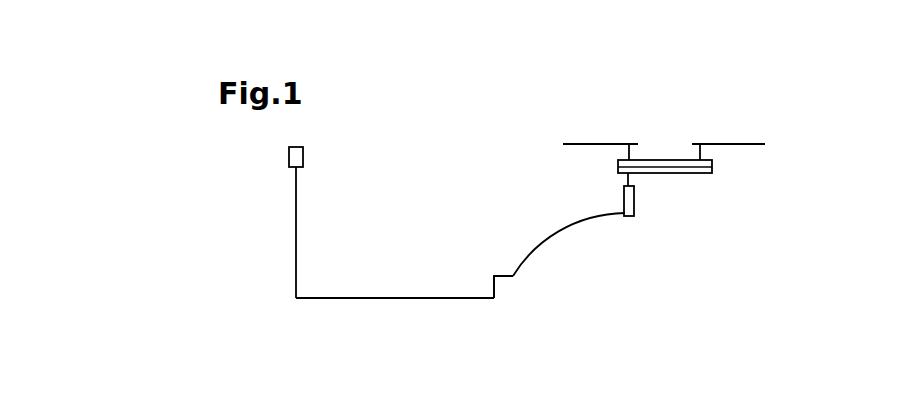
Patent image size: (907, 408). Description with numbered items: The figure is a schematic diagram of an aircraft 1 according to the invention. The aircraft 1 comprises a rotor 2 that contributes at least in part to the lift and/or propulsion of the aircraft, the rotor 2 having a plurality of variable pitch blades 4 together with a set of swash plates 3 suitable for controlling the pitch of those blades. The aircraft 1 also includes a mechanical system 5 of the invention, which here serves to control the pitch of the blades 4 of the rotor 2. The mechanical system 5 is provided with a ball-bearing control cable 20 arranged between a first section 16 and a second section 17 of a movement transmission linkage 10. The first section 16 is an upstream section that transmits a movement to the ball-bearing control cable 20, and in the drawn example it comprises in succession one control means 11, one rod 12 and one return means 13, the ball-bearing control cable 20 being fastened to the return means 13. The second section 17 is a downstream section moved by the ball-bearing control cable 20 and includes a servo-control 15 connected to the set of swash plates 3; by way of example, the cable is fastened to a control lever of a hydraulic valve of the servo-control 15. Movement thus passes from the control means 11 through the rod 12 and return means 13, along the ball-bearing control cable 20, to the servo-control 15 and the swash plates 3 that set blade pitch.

The aircraft 1 is at (644, 296).
The rotor 2 is at (707, 169).
The set of swash plates 3 is at (722, 171).
The variable pitch blades 4 is at (746, 144).
The mechanical system 5 is at (426, 259).
The movement transmission linkage 10 is at (492, 219).
The control means 11 is at (296, 215).
The rod 12 is at (373, 298).
The return means 13 is at (490, 268).
The servo-control 15 is at (682, 217).
The second section 17 is at (634, 202).
The first section 16 is at (506, 286).
The ball-bearing control cable 20 is at (548, 233).